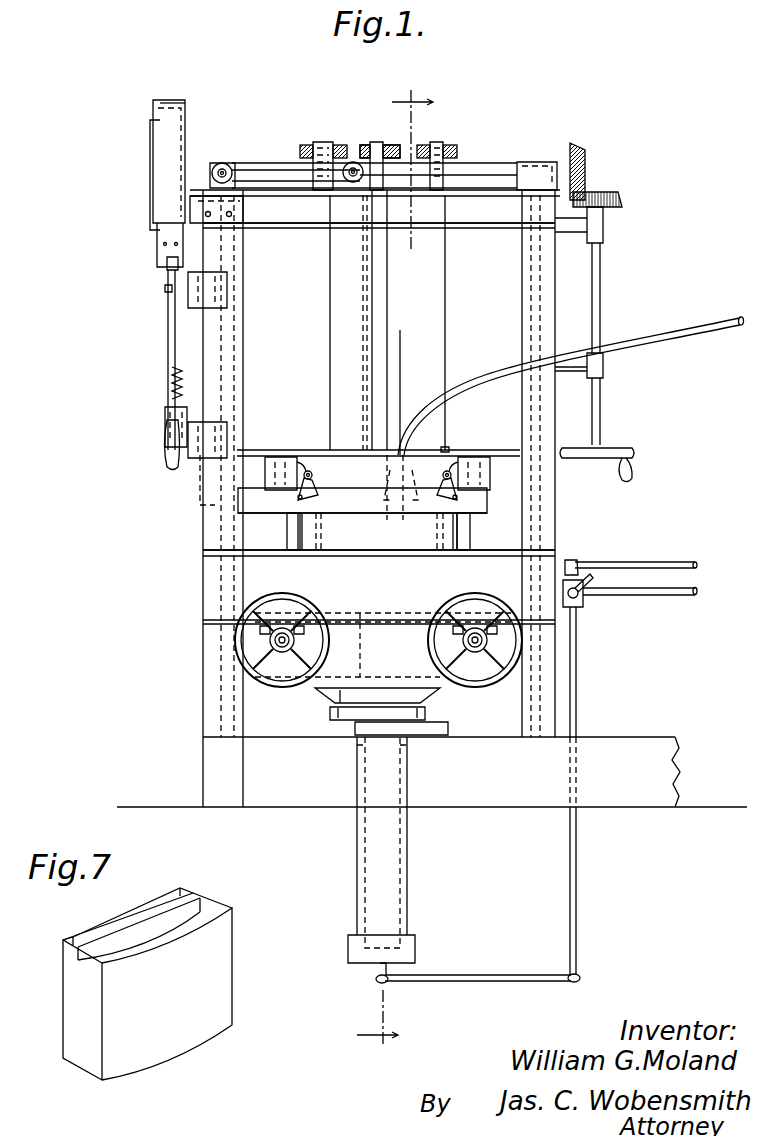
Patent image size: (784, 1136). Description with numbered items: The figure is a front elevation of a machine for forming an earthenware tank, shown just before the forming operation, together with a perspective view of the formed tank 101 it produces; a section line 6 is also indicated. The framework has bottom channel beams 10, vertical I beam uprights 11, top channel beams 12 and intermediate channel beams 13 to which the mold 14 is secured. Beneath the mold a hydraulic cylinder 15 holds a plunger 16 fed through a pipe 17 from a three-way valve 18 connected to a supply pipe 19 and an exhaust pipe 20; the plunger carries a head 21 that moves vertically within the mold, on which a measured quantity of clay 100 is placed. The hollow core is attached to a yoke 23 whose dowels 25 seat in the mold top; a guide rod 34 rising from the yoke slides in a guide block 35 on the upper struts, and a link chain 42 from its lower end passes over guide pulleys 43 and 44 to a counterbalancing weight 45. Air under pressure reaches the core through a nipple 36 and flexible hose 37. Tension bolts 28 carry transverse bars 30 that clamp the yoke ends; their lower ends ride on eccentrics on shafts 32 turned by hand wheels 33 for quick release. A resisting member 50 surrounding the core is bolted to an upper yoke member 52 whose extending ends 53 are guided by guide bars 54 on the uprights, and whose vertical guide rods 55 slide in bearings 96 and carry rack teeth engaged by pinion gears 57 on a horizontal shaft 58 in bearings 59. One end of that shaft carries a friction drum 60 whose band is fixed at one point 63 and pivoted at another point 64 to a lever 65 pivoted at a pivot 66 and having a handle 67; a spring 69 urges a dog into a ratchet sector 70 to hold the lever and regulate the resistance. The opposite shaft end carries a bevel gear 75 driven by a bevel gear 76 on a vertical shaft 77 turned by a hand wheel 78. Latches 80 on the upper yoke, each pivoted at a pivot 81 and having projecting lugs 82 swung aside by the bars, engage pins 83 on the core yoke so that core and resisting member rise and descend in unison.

In FIG. 1, the section line 6 is at (395, 565).
In FIG. 1, the channel beams 10 is at (480, 800).
In FIG. 1, the vertical side uprights 11 is at (283, 352).
In FIG. 1, the channel beams 12 is at (293, 228).
In FIG. 1, the channel beams 13 is at (248, 578).
In FIG. 1, the mold 14 is at (300, 692).
In FIG. 1, the hydraulic cylinder 15 is at (408, 890).
In FIG. 1, the plunger 16 is at (365, 886).
In FIG. 1, the pipe 17 is at (577, 700).
In FIG. 1, the three-way valve 18 is at (584, 600).
In FIG. 1, the supply pipe 19 is at (657, 598).
In FIG. 1, the exhaust pipe 20 is at (657, 560).
In FIG. 1, the head 21 is at (318, 702).
In FIG. 1, the yoke 23 is at (408, 522).
In FIG. 1, the dowels 25 is at (322, 524).
In FIG. 1, the tension bolts 28 is at (287, 540).
In FIG. 1, the transversely extending bars 30 is at (262, 460).
In FIG. 1, the transversely extending shafts 32 is at (270, 640).
In FIG. 1, the hand wheels 33 is at (245, 660).
In FIG. 1, the guide rod 34 is at (388, 330).
In FIG. 1, the guide block 35 is at (390, 144).
In FIG. 1, the nipple 36 is at (395, 510).
In FIG. 1, the flexible hose 37 is at (678, 326).
In FIG. 1, the link chain 42 is at (275, 160).
In FIG. 1, the guide pulley 43 is at (352, 160).
In FIG. 1, the guide pulley 44 is at (228, 160).
In FIG. 1, the counterbalancing weight 45 is at (200, 504).
In FIG. 1, the resisting member 50 is at (420, 640).
In FIG. 1, the yoke member 52 is at (405, 410).
In FIG. 1, the extending ends 53 is at (268, 472).
In FIG. 1, the guide bars 54 is at (227, 292).
In FIG. 1, the guide rods 55 is at (330, 327).
In FIG. 1, the pinion gears 57 is at (323, 142).
In FIG. 1, the horizontal shaft 58 is at (478, 170).
In FIG. 1, the bearings 59 is at (200, 168).
In FIG. 1, the friction drum 60 is at (153, 154).
In FIG. 1, the fixed securement 63 is at (160, 220).
In FIG. 1, the pivotal connection 64 is at (167, 262).
In FIG. 1, the lever 65 is at (168, 345).
In FIG. 1, the pivot 66 is at (165, 290).
In FIG. 1, the handle 67 is at (160, 100).
In FIG. 1, the spring 69 is at (172, 390).
In FIG. 1, the ratchet sector 70 is at (168, 440).
In FIG. 1, the bevel gear 75 is at (586, 150).
In FIG. 1, the bevel gear 76 is at (618, 199).
In FIG. 1, the vertical shaft 77 is at (602, 278).
In FIG. 1, the hand wheel 78 is at (612, 450).
In FIG. 1, the latches 80 is at (318, 494).
In FIG. 1, the pivot 81 is at (306, 470).
In FIG. 1, the projecting lugs 82 is at (300, 462).
In FIG. 1, the pins 83 is at (298, 498).
In FIG. 1, the bearings 96 is at (304, 145).
In FIG. 1, the clay 100 is at (430, 685).
In FIG. 7, the formed tank 101 is at (147, 984).